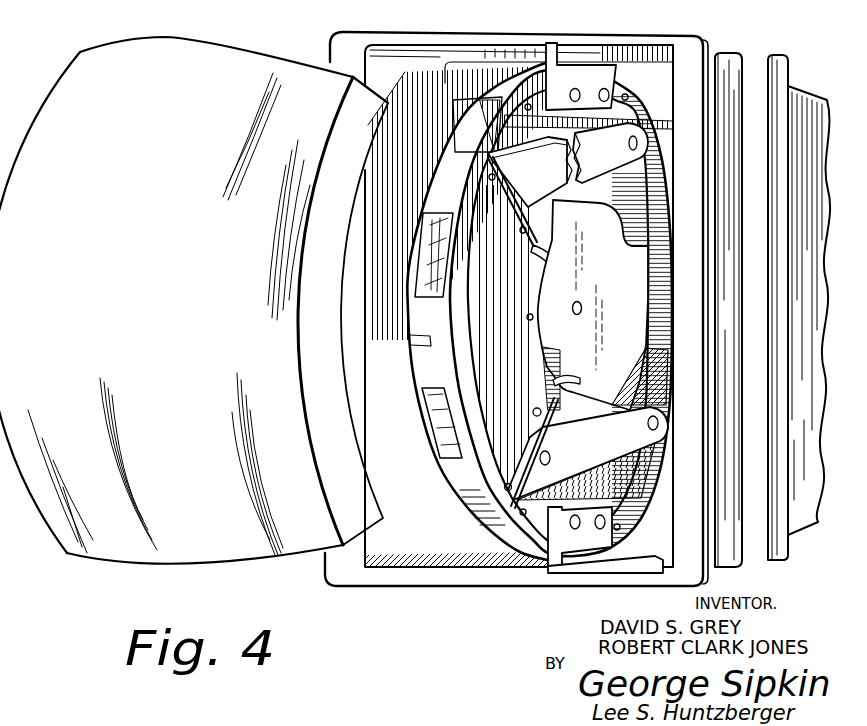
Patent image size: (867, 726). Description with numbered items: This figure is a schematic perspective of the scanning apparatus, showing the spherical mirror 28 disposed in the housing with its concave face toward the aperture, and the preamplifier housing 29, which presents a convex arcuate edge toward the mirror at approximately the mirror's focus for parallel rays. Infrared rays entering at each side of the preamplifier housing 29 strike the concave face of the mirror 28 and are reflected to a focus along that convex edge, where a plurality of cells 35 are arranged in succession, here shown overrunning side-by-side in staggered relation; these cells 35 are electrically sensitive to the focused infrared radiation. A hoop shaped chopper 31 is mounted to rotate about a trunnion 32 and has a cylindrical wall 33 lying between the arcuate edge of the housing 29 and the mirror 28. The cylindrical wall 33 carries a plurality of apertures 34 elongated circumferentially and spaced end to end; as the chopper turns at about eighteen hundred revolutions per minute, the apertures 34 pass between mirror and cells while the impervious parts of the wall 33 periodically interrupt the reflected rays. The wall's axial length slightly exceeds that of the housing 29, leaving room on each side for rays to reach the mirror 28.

The spherical mirror 28 is at (138, 215).
The preamplifier housing 29 is at (516, 375).
The hoop shaped chopper 31 is at (398, 317).
The trunnion 32 is at (582, 300).
The cylindrical wall 33 is at (427, 350).
The apertures 34 is at (441, 415).
The cells 35 is at (437, 277).